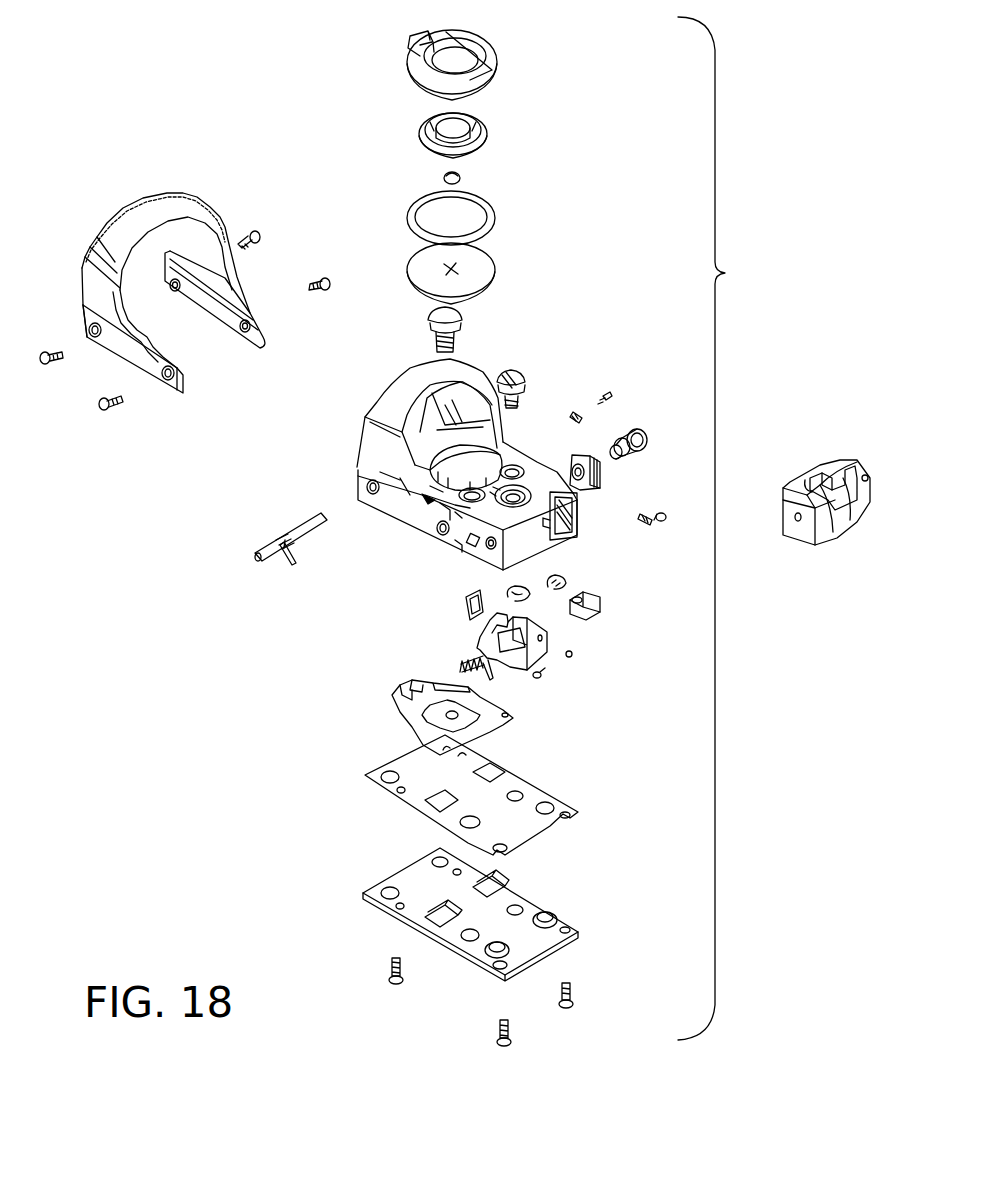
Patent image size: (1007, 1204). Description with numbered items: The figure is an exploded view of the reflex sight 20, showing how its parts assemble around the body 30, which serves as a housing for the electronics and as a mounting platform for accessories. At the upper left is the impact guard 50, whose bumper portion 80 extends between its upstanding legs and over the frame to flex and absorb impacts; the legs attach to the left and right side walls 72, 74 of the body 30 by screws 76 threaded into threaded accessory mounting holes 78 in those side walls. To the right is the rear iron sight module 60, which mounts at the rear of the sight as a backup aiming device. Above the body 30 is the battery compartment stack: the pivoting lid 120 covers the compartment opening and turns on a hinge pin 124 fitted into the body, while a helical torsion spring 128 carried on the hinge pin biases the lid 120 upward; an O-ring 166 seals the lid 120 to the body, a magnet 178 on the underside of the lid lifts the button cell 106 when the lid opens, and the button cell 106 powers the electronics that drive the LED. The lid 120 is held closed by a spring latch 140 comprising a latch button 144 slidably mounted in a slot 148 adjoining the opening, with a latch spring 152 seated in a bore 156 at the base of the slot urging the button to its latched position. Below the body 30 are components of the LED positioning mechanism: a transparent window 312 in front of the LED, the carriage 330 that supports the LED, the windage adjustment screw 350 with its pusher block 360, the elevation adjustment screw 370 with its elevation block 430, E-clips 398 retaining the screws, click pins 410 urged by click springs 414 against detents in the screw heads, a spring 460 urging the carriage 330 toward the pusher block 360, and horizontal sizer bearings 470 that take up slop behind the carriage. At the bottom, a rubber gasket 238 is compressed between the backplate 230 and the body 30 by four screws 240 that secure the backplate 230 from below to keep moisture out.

The reflex sight 20 is at (723, 528).
The body 30 is at (457, 464).
The impact guard 50 is at (97, 212).
The rear iron sight module 60 is at (809, 440).
The left side wall 72 is at (457, 542).
The right side wall 74 is at (243, 288).
The screws 76 is at (322, 280).
The threaded accessory mounting holes 78 is at (367, 483).
The bumper portion 80 is at (192, 207).
The button cell 106 is at (492, 262).
The lid 120 is at (505, 150).
The hinge pin 124 is at (290, 525).
The helical torsion spring 128 is at (283, 553).
The spring latch 140 is at (428, 341).
The latch button 144 is at (428, 316).
The slot 148 is at (424, 496).
The latch spring 152 is at (456, 337).
The bore 156 is at (432, 500).
The O-ring 166 is at (492, 210).
The magnet 178 is at (460, 176).
The backplate 230 is at (368, 897).
The rubber gasket 238 is at (378, 790).
The screws 240 is at (388, 973).
The transparent window 312 is at (465, 608).
The carriage 330 is at (480, 640).
The windage adjustment screw 350 is at (639, 430).
The pusher block 360 is at (574, 461).
The elevation adjustment screw 370 is at (521, 368).
The E-clips 398 is at (518, 593).
The click pins 410 is at (606, 393).
The click springs 414 is at (575, 398).
The elevation block 430 is at (600, 600).
The spring 460 is at (460, 666).
The horizontal sizer bearings 470 is at (570, 660).